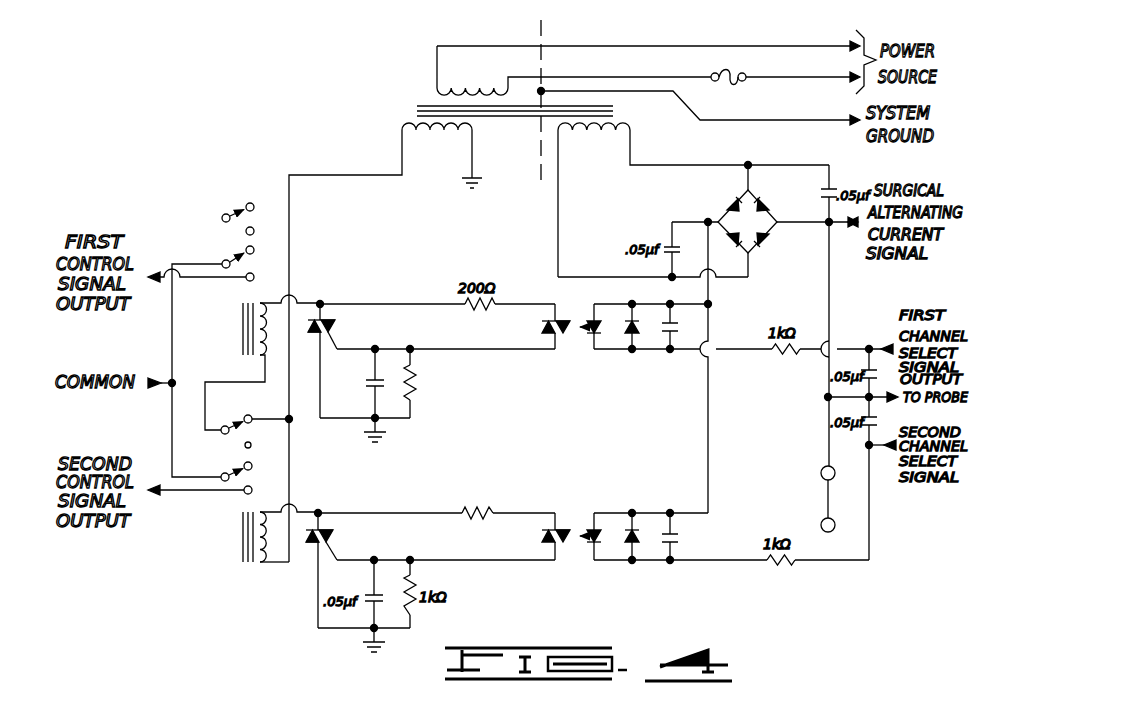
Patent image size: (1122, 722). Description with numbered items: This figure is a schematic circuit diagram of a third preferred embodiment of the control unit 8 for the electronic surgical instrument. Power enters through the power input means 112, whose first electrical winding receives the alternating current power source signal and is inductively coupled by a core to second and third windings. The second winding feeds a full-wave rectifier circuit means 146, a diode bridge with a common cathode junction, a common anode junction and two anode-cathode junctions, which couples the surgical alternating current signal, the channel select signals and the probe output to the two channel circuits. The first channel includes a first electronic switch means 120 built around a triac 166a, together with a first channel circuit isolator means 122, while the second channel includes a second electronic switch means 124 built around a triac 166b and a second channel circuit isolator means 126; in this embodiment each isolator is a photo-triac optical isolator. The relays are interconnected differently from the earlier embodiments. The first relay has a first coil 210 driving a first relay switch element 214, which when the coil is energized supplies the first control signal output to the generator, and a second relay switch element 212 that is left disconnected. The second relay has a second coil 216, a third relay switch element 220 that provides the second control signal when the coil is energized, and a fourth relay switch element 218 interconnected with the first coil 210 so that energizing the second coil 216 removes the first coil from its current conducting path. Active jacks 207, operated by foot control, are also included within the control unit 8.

The control unit 8 is at (286, 126).
The power input means 112 is at (420, 97).
The first electronic switch means 120 is at (428, 413).
The first channel circuit isolator means 122 is at (569, 358).
The second electronic switch means 124 is at (349, 499).
The second channel circuit isolator means 126 is at (581, 502).
The full-wave rectifier circuit means 146 is at (762, 262).
The triac 166a is at (337, 324).
The triac 166b is at (336, 535).
The active jacks 207 is at (828, 497).
The first coil 210 is at (273, 326).
The second relay switch element 212 is at (239, 203).
The first relay switch element 214 is at (229, 248).
The second coil 216 is at (285, 567).
The fourth relay switch element 218 is at (235, 408).
The third relay switch element 220 is at (229, 458).